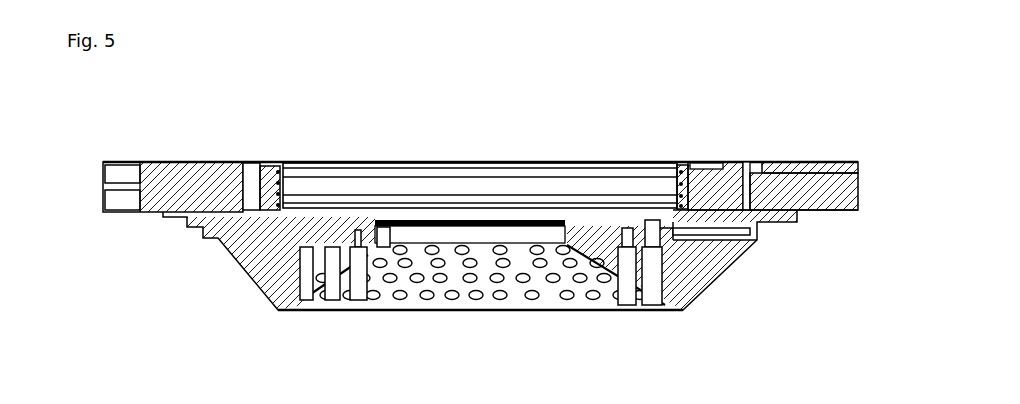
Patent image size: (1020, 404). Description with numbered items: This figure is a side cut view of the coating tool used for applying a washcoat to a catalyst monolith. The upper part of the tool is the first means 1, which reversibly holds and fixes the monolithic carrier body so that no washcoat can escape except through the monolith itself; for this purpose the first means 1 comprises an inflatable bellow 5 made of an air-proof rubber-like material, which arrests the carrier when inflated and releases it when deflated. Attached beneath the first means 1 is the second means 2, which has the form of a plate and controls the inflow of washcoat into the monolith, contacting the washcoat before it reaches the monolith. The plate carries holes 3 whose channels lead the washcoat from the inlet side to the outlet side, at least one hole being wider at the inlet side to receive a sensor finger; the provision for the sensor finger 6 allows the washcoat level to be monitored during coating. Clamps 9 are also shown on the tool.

The first means 1 is at (170, 172).
The second means 2 is at (275, 262).
The holes with asymmetric width 3 is at (658, 268).
The bellow 5 is at (678, 173).
The provision for sensor finger 6 is at (787, 165).
The clamps 9 is at (433, 222).